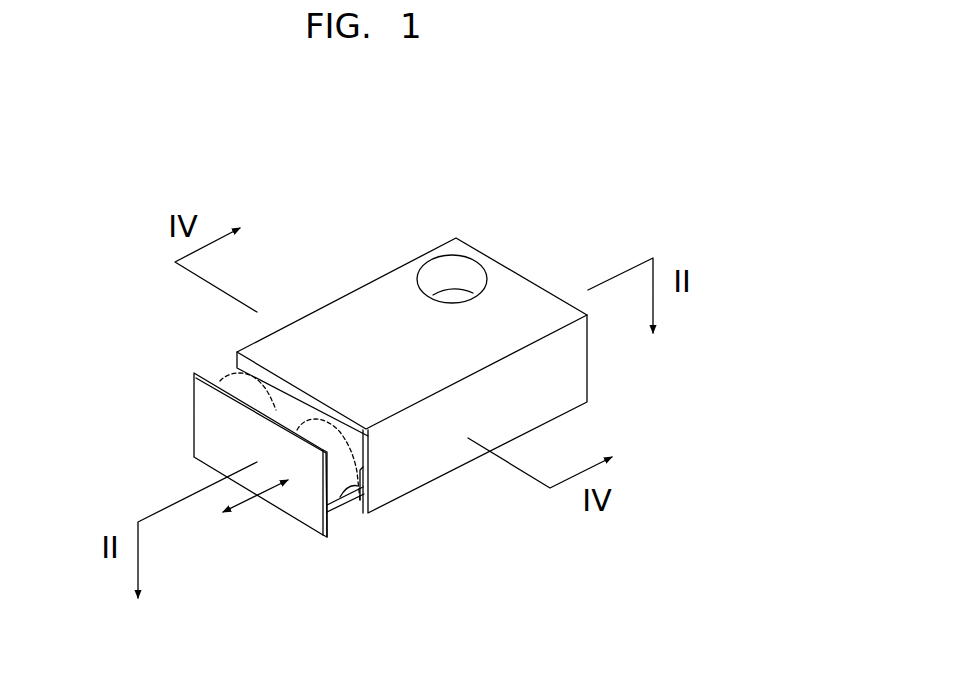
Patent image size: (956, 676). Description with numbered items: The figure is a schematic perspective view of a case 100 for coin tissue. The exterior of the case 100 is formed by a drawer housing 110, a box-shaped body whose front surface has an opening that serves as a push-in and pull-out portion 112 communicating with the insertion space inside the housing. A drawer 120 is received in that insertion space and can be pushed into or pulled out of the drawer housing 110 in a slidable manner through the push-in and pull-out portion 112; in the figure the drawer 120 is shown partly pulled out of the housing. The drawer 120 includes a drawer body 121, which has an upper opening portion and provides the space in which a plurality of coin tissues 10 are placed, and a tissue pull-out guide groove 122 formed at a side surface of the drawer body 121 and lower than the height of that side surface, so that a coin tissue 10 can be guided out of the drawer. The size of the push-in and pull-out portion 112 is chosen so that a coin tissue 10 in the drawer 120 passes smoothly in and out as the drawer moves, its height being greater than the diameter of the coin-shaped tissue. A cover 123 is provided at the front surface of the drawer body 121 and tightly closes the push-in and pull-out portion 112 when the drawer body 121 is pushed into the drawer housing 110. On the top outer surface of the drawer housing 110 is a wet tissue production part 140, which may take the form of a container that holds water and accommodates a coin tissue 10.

The case for coin tissue 100 is at (505, 190).
The drawer housing 110 is at (338, 298).
The push-in and pull-out portion 112 is at (288, 410).
The wet tissue production part 140 is at (452, 287).
The drawer 120 is at (244, 520).
The drawer body 121 is at (333, 513).
The tissue pull-out guide groove 122 is at (368, 493).
The cover 123 is at (213, 428).
The coin tissue 10 is at (368, 445).